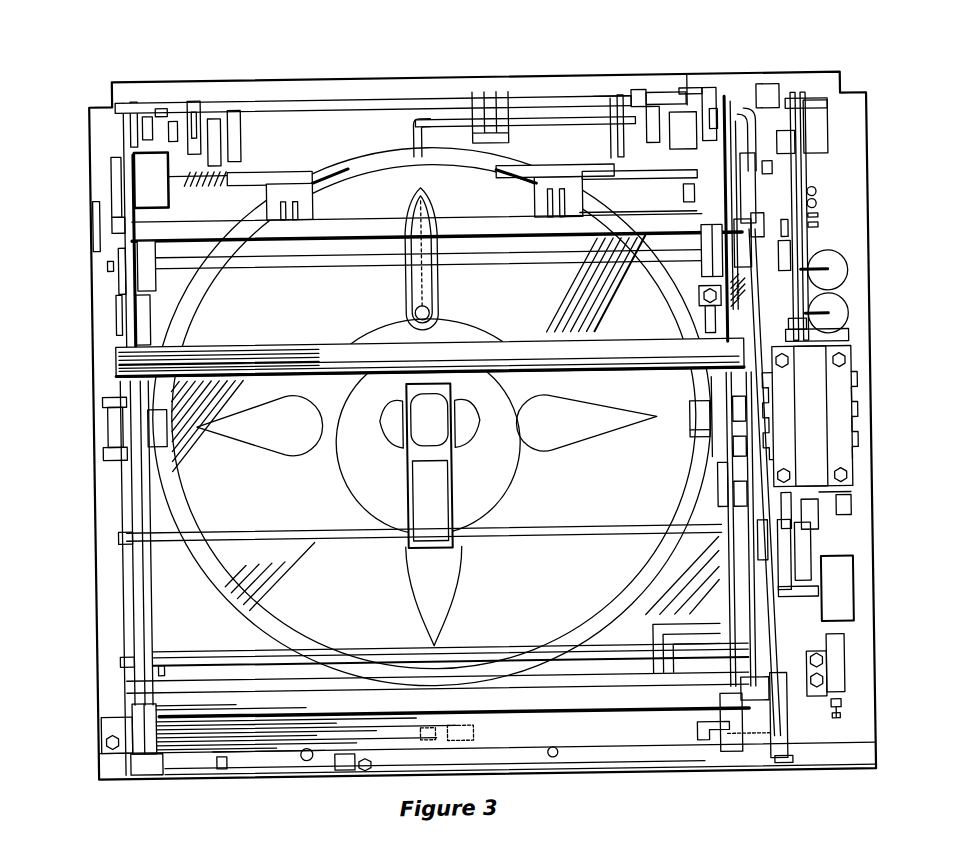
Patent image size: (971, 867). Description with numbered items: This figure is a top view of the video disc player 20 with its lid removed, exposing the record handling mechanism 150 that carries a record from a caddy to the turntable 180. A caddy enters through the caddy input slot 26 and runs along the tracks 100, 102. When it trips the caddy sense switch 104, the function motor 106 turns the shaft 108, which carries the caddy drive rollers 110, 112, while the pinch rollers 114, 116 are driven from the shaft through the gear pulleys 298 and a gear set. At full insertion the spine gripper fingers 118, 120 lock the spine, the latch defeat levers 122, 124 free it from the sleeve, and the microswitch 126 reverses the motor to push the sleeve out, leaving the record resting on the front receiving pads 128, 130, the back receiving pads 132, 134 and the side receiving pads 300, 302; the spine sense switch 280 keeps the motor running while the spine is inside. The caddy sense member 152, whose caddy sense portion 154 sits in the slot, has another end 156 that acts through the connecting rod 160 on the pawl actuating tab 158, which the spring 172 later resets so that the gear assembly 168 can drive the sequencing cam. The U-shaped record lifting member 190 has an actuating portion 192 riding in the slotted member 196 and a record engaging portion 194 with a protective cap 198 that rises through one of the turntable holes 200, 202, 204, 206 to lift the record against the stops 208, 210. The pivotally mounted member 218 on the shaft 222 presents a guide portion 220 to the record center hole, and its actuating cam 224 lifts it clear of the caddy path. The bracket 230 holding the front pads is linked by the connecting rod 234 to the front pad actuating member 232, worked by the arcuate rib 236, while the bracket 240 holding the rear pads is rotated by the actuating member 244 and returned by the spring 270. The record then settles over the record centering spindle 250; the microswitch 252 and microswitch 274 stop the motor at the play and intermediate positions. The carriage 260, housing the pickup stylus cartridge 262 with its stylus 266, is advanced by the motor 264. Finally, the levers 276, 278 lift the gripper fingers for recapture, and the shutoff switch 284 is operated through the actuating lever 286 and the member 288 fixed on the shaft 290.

The video disc player 20 is at (955, 382).
The caddy input slot 26 is at (248, 762).
The track 100 is at (140, 614).
The track 102 is at (722, 617).
The caddy sense switch 104 is at (138, 312).
The function motor 106 is at (146, 173).
The shaft 108 is at (344, 256).
The caddy drive roller 110 is at (258, 256).
The caddy drive roller 112 is at (704, 270).
The pinch roller 114 is at (152, 296).
The pinch roller 116 is at (665, 304).
The spine gripper finger 118 is at (200, 125).
The spine gripper finger 120 is at (660, 128).
The latch defeat lever 122 is at (148, 112).
The latch defeat lever 124 is at (714, 118).
The microswitch 126 is at (160, 118).
The front receiving pad 128 is at (248, 645).
The front receiving pad 130 is at (591, 641).
The back receiving pad 132 is at (258, 172).
The back receiving pad 134 is at (591, 175).
The record handling mechanism 150 is at (598, 87).
The caddy sense member 152 is at (742, 755).
The caddy sense portion 154 is at (700, 733).
The other end 156 is at (772, 765).
The pawl actuating tab 158 is at (794, 262).
The connecting rod 160 is at (850, 342).
The gear assembly 168 is at (848, 295).
The spring 172 is at (742, 348).
The turntable 180 is at (244, 571).
The record lifting member 190 is at (555, 118).
The actuating portion 192 is at (822, 199).
The record engaging portion 194 is at (434, 279).
The slotted member 196 is at (790, 178).
The cap 198 is at (399, 321).
The turntable hole 200 is at (432, 312).
The turntable hole 202 is at (257, 444).
The turntable hole 204 is at (448, 583).
The turntable hole 206 is at (620, 434).
The stop 208 is at (312, 204).
The stop 210 is at (541, 206).
The pivotally mounted member 218 is at (447, 517).
The guide portion 220 is at (350, 473).
The shaft 222 is at (551, 538).
The actuating cam 224 is at (723, 501).
The bracket 230 is at (344, 650).
The front pad actuating member 232 is at (794, 233).
The connecting rod 234 is at (858, 401).
The arcuate rib 236 is at (799, 150).
The bracket 240 is at (645, 178).
The actuating member 244 is at (695, 214).
The record centering spindle 250 is at (472, 440).
The microswitch 252 is at (850, 273).
The carriage 260 is at (337, 737).
The pickup stylus cartridge 262 is at (470, 733).
The motor 264 is at (852, 583).
The stylus 266 is at (416, 732).
The spring 270 is at (196, 184).
The microswitch 274 is at (830, 152).
The lever 276 is at (135, 127).
The lever 278 is at (800, 150).
The spine sense switch 280 is at (218, 125).
The shutoff switch 284 is at (710, 158).
The actuating lever 286 is at (693, 189).
The member 288 is at (748, 104).
The shaft 290 is at (367, 101).
The gear pulleys 298 is at (124, 282).
The side receiving pad 300 is at (156, 418).
The side receiving pad 302 is at (696, 415).